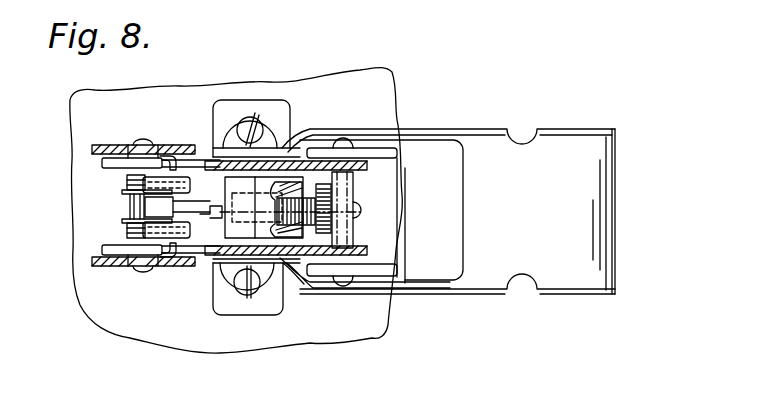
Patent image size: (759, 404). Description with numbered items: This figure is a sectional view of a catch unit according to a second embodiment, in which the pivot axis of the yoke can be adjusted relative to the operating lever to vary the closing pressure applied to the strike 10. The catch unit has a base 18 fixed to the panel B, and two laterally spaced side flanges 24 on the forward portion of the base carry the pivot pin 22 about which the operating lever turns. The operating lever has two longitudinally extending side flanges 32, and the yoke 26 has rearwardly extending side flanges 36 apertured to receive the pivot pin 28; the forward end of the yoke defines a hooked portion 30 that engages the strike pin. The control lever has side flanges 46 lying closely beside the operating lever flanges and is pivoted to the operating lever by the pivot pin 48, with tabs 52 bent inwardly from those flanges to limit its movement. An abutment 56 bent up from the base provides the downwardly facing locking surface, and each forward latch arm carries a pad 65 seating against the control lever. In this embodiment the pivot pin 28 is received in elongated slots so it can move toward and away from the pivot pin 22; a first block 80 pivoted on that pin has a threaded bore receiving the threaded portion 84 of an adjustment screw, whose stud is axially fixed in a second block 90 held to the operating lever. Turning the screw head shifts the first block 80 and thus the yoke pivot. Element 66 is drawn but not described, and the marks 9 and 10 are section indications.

The panel B is at (380, 330).
The base 18 is at (400, 217).
The pivot pin 22 is at (343, 140).
The side flanges 24 is at (397, 162).
The yoke 26 is at (552, 290).
The pivot pin 28 is at (250, 142).
The hooked portion 30 is at (615, 253).
The side flanges 32 is at (366, 171).
The side flanges 36 is at (415, 129).
The side flanges 46 is at (177, 147).
The pivot pin 48 is at (142, 268).
The tabs 52 is at (100, 170).
The abutment 56 is at (200, 205).
The pad 65 is at (191, 181).
The central body 66 is at (128, 208).
The first block 80 is at (275, 182).
The threaded portion 84 is at (306, 275).
The second block 90 is at (353, 193).
The section line 9- 9 is at (92, 215).
The strike 10 is at (92, 255).